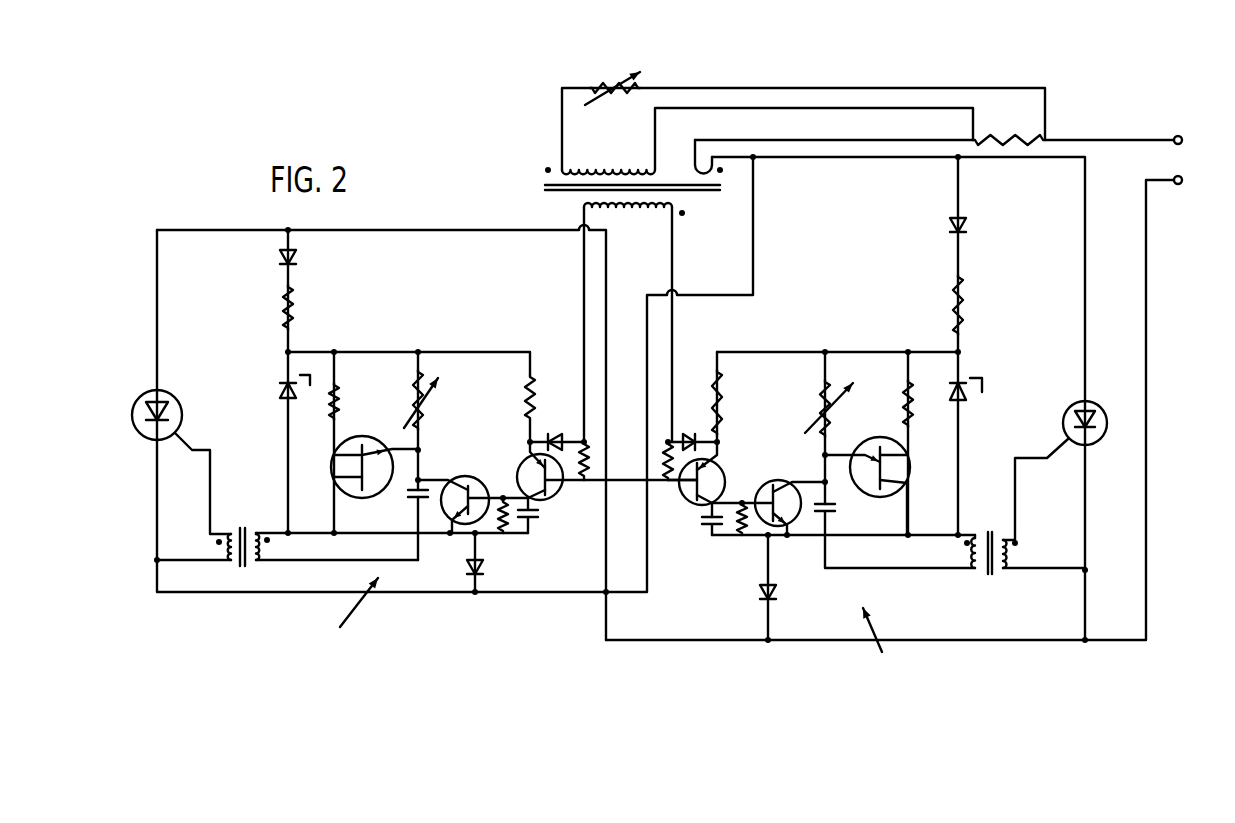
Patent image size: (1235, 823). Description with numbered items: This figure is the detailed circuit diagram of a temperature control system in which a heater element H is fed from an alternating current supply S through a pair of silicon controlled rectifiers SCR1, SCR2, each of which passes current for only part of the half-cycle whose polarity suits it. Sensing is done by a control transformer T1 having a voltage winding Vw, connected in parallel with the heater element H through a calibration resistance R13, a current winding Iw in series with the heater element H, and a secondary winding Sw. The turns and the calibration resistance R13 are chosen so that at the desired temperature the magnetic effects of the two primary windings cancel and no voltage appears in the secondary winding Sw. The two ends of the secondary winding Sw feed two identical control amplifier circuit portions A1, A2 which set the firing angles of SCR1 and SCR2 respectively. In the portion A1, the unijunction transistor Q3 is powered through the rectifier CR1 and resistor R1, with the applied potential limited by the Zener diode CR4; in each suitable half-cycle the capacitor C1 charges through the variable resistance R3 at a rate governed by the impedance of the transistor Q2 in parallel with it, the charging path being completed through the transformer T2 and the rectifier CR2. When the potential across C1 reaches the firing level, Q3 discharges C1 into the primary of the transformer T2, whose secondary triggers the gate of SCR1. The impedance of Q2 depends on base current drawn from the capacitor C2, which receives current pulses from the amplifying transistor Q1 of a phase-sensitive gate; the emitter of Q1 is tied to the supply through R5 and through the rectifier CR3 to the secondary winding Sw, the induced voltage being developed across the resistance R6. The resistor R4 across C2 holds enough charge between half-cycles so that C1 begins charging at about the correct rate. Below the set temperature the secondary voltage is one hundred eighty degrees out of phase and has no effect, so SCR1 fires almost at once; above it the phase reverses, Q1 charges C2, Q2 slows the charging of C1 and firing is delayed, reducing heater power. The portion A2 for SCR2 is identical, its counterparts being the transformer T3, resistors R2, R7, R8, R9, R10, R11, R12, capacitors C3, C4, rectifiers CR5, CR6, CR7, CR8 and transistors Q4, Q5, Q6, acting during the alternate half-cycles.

The silicon controlled rectifier SCR1 is at (1106, 427).
The silicon controlled rectifier SCR2 is at (178, 428).
The control transformer T1 is at (610, 179).
The transformer T2 is at (982, 575).
The pulse transformer T3 is at (243, 568).
The voltage winding Vw is at (606, 165).
The secondary winding Sw is at (612, 214).
The current winding Iw is at (698, 160).
The heater element H is at (1025, 140).
The alternating current supply S is at (1186, 160).
The resistor R1 is at (966, 306).
The resistor R2 is at (904, 396).
The variable resistance R3 is at (822, 394).
The resistor R4 is at (744, 538).
The resistor R5 is at (717, 400).
The resistance R6 is at (666, 476).
The resistor R7 is at (300, 311).
The resistor R8 is at (353, 397).
The variable resistor R9 is at (412, 402).
The resistor R10 is at (500, 528).
The resistor R11 is at (524, 392).
The resistor R12 is at (586, 483).
The calibration resistance R13 is at (609, 96).
The capacitor C1 is at (836, 509).
The capacitor C2 is at (703, 518).
The capacitor C3 is at (412, 497).
The capacitor C4 is at (540, 515).
The rectifier CR1 is at (970, 226).
The rectifier CR2 is at (777, 590).
The rectifier CR3 is at (698, 434).
The Zener diode CR4 is at (986, 396).
The diode CR5 is at (300, 260).
The diode CR6 is at (466, 568).
The diode CR7 is at (546, 434).
The zener diode CR8 is at (281, 396).
The amplifying transistor Q1 is at (727, 480).
The transistor Q2 is at (781, 482).
The unijunction transistor Q3 is at (910, 479).
The transistor Q4 is at (526, 466).
The transistor Q5 is at (462, 474).
The transistor Q6 is at (332, 462).
The control amplifier circuit portion A1 is at (881, 643).
The control amplifier circuit portion A2 is at (342, 617).